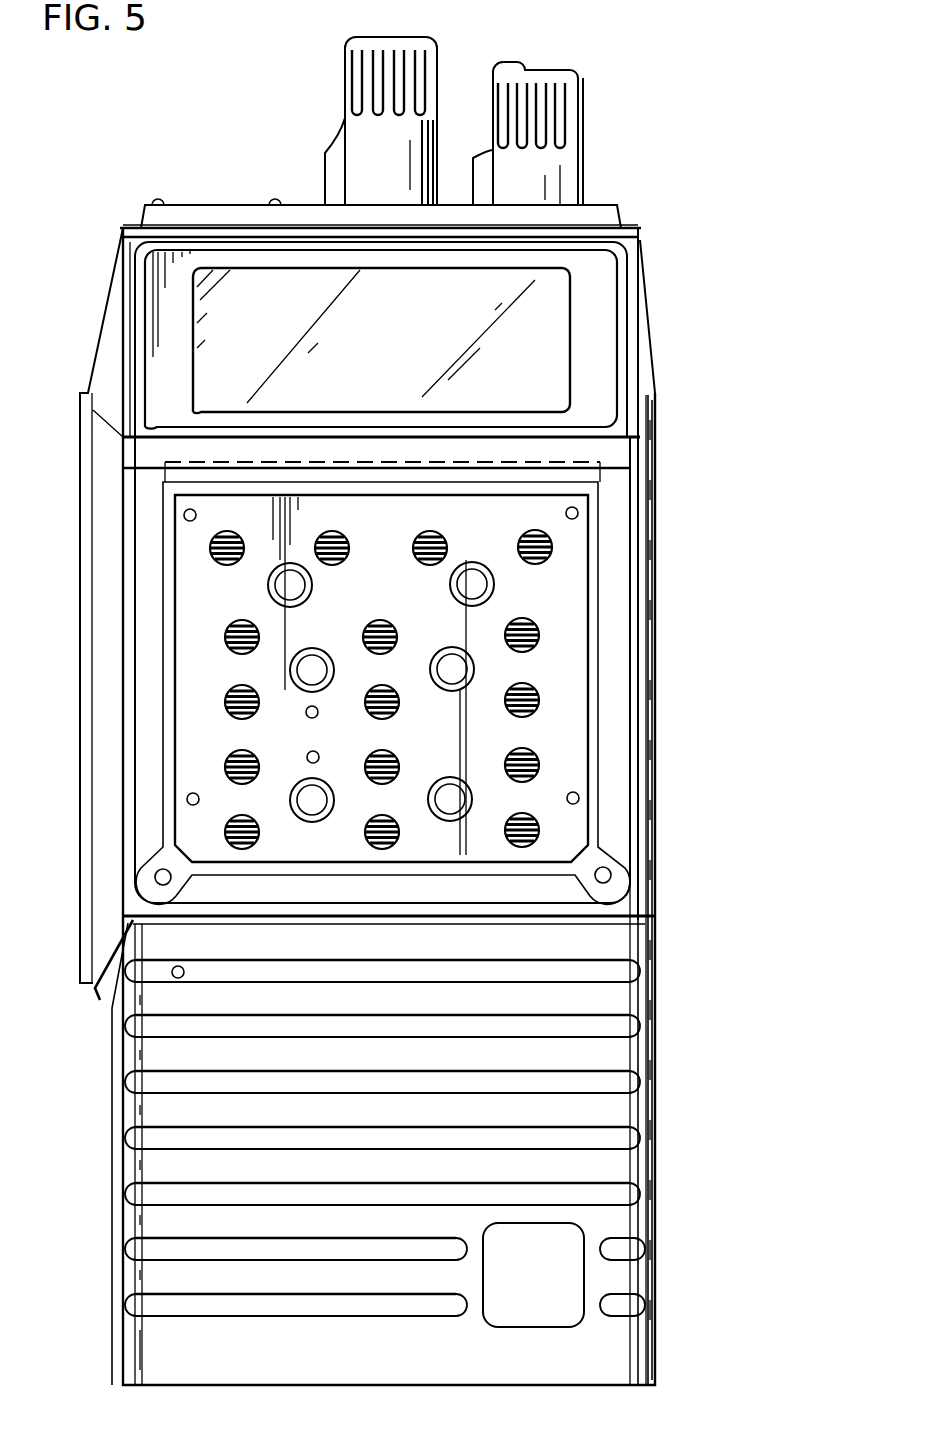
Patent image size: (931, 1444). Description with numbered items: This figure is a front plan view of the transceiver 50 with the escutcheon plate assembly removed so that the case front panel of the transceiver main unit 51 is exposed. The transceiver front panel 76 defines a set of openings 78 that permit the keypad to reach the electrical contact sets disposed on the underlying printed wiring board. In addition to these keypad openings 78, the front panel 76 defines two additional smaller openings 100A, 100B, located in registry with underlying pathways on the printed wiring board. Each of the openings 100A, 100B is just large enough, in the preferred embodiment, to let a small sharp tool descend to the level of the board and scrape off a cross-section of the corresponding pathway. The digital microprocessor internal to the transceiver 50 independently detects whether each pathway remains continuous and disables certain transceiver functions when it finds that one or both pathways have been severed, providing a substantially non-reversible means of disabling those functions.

The transceiver 50 is at (714, 416).
The transceiver main unit 51 is at (655, 642).
The transceiver front panel 76 is at (572, 740).
The openings 78 is at (533, 843).
The opening 100A is at (318, 716).
The opening 100B is at (319, 762).